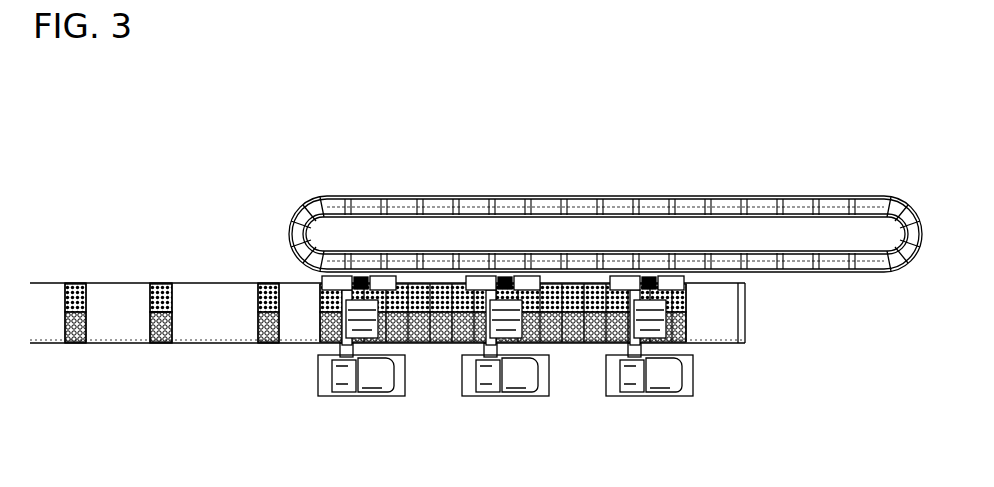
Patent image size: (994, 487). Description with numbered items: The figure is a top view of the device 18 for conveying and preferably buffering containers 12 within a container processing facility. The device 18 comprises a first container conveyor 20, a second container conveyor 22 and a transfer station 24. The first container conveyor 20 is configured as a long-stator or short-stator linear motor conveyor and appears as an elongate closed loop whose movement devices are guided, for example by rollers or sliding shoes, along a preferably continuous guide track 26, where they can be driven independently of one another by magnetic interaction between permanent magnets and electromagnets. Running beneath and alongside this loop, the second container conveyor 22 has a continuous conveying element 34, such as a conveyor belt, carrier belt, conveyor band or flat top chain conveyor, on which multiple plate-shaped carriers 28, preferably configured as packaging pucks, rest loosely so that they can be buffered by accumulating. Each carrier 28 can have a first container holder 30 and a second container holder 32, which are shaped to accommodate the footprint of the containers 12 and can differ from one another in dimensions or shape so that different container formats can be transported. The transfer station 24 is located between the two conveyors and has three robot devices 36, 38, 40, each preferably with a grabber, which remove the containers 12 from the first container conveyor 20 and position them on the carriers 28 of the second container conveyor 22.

The container 12 is at (138, 280).
The device for conveying containers 18 is at (228, 165).
The first container conveyor 20 is at (659, 170).
The second container conveyor 22 is at (762, 327).
The transfer station 24 is at (725, 384).
The guide track 26 is at (538, 198).
The carrier 28 is at (88, 338).
The first container holder 30 is at (179, 301).
The second container holder 32 is at (174, 336).
The conveying element 34 is at (240, 337).
The robot device 36 is at (672, 380).
The robot device 38 is at (525, 378).
The robot device 40 is at (385, 378).